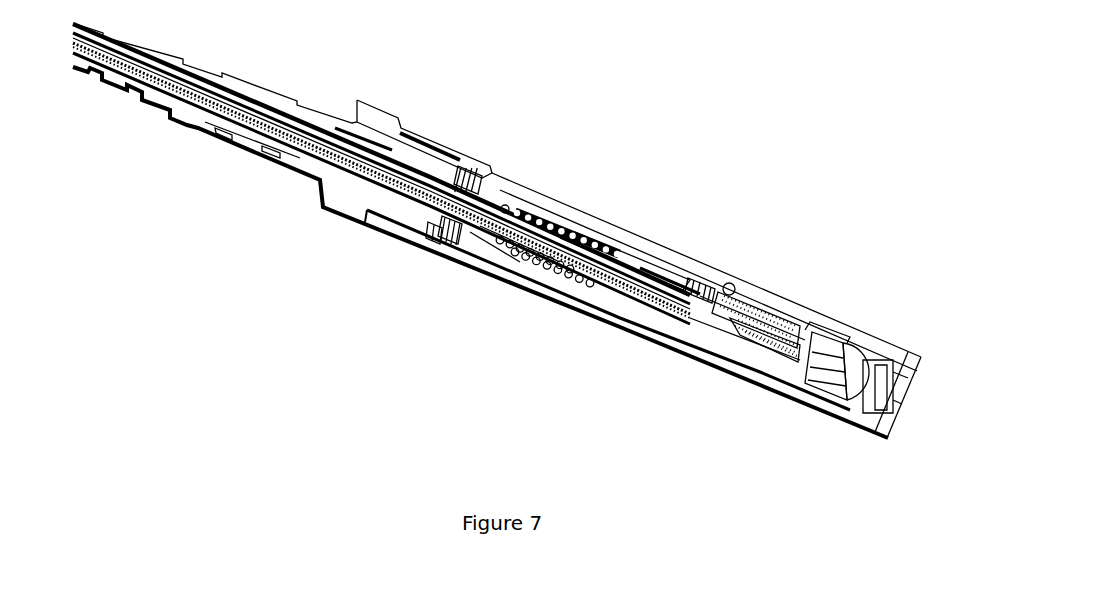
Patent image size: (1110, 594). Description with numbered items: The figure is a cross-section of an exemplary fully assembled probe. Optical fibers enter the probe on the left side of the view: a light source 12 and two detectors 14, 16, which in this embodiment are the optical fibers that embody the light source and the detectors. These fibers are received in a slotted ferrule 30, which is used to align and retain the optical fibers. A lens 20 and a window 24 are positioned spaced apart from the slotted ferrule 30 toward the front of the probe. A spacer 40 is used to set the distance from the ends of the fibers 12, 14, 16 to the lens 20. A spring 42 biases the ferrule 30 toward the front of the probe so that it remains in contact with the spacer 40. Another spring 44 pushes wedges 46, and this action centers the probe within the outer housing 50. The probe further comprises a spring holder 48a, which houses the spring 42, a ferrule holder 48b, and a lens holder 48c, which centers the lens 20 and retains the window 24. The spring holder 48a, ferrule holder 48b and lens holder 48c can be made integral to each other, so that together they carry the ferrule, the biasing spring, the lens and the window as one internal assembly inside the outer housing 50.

The light source 12 is at (327, 135).
The detector 14 is at (381, 171).
The detector 16 is at (381, 183).
The lens 20 is at (848, 388).
The window 24 is at (867, 407).
The slotted ferrule 30 is at (760, 343).
The spacer 40 is at (847, 337).
The spring 42 is at (548, 256).
The spring 44 is at (440, 233).
The wedges 46 is at (488, 188).
The spring holder 48a is at (613, 226).
The ferrule holder 48b is at (714, 280).
The lens holder 48c is at (813, 320).
The outer housing 50 is at (434, 140).